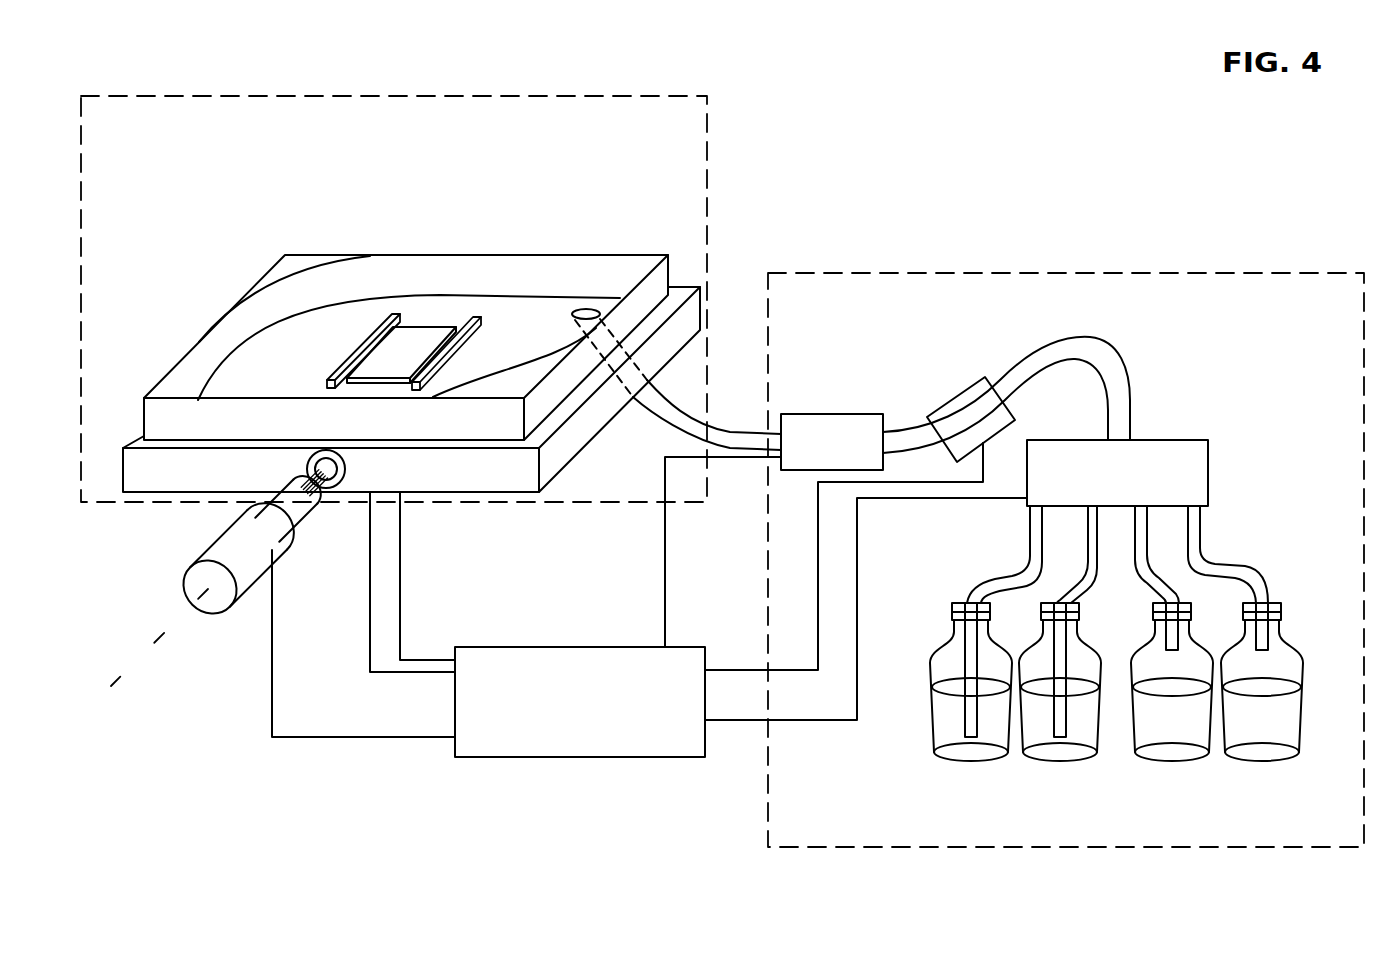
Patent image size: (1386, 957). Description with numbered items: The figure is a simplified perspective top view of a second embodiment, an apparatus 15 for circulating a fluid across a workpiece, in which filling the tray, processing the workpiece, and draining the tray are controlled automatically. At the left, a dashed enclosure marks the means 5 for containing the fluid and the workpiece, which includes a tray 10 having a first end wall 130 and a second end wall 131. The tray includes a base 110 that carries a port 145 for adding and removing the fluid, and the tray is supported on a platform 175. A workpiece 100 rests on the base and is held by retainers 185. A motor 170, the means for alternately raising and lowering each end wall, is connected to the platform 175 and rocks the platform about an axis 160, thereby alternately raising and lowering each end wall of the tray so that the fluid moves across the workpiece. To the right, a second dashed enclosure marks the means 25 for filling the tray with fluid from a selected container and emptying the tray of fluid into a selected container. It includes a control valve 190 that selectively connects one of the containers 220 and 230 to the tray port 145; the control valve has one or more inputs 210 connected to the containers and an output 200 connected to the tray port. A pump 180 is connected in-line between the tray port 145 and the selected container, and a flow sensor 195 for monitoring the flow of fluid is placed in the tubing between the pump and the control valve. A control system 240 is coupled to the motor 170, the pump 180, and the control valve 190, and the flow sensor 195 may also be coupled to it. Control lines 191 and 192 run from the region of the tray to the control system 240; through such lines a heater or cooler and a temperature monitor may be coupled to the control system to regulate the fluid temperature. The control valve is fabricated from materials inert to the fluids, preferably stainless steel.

The means for containing a fluid and a workpiece 5 is at (708, 138).
The tray 10 is at (542, 220).
The apparatus 15 is at (1010, 160).
The means for filling and emptying the tray 25 is at (1350, 273).
The substrate / chip 100 is at (410, 343).
The base 110 is at (542, 348).
The first end wall 130 is at (193, 367).
The second end wall 131 is at (625, 320).
The port 145 is at (590, 308).
The axis 160 is at (133, 663).
The motor 170 is at (248, 570).
The platform 175 is at (483, 477).
The pump 180 is at (828, 414).
The clamps 185 is at (405, 393).
The control valve 190 is at (1210, 453).
The control line 191 is at (370, 588).
The control line 192 is at (400, 571).
The flow sensor 195 is at (967, 382).
The output 200 is at (1130, 437).
The inputs 210 is at (1188, 520).
The containers 220 is at (1053, 762).
The containers 230 is at (1247, 762).
The control system 240 is at (575, 757).